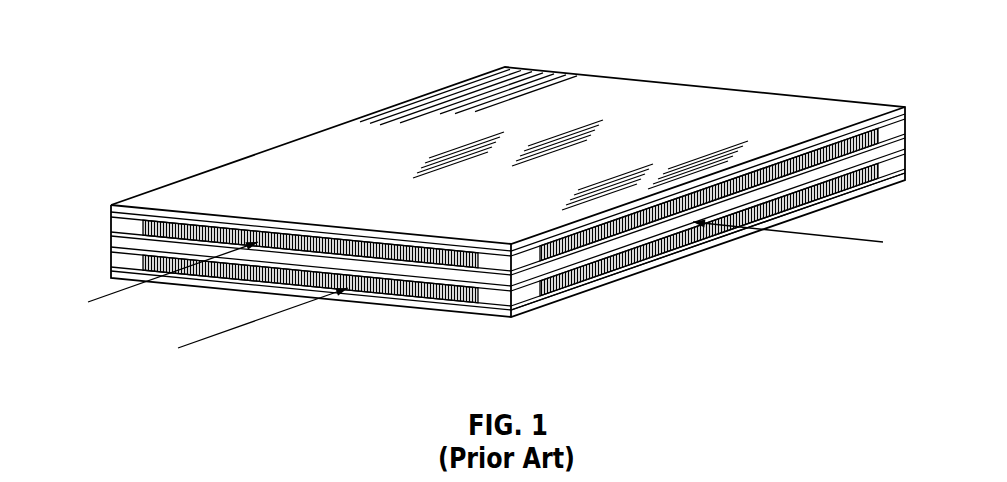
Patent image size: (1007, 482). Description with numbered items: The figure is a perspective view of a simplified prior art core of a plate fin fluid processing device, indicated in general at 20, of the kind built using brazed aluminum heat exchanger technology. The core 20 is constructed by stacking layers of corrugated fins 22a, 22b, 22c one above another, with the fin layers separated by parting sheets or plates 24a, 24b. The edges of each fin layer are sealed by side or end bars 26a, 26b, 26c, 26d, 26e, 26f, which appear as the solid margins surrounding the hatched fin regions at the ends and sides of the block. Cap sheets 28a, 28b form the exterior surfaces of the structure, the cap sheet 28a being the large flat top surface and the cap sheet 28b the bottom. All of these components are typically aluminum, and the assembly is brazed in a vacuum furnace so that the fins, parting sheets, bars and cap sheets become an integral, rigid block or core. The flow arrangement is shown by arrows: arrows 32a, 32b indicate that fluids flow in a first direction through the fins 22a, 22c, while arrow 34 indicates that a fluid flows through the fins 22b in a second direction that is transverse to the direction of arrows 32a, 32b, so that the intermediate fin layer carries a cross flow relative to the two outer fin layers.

The core of a prior art plate fin fluid processing device 20 is at (216, 63).
The corrugated fin 22a is at (158, 220).
The corrugated fin 22b is at (624, 256).
The corrugated fin 22c is at (372, 292).
The parting sheet 24a is at (832, 152).
The parting sheet 24b is at (523, 288).
The side bar 26a is at (117, 219).
The side bar 26b is at (901, 130).
The side bar 26c is at (488, 280).
The side bar 26d is at (897, 146).
The side bar 26e is at (117, 258).
The side bar 26f is at (560, 280).
The cap sheet 28a is at (584, 90).
The cap sheet 28b is at (846, 200).
The arrow 32a is at (118, 292).
The arrow 32b is at (248, 327).
The arrow 34 is at (834, 239).